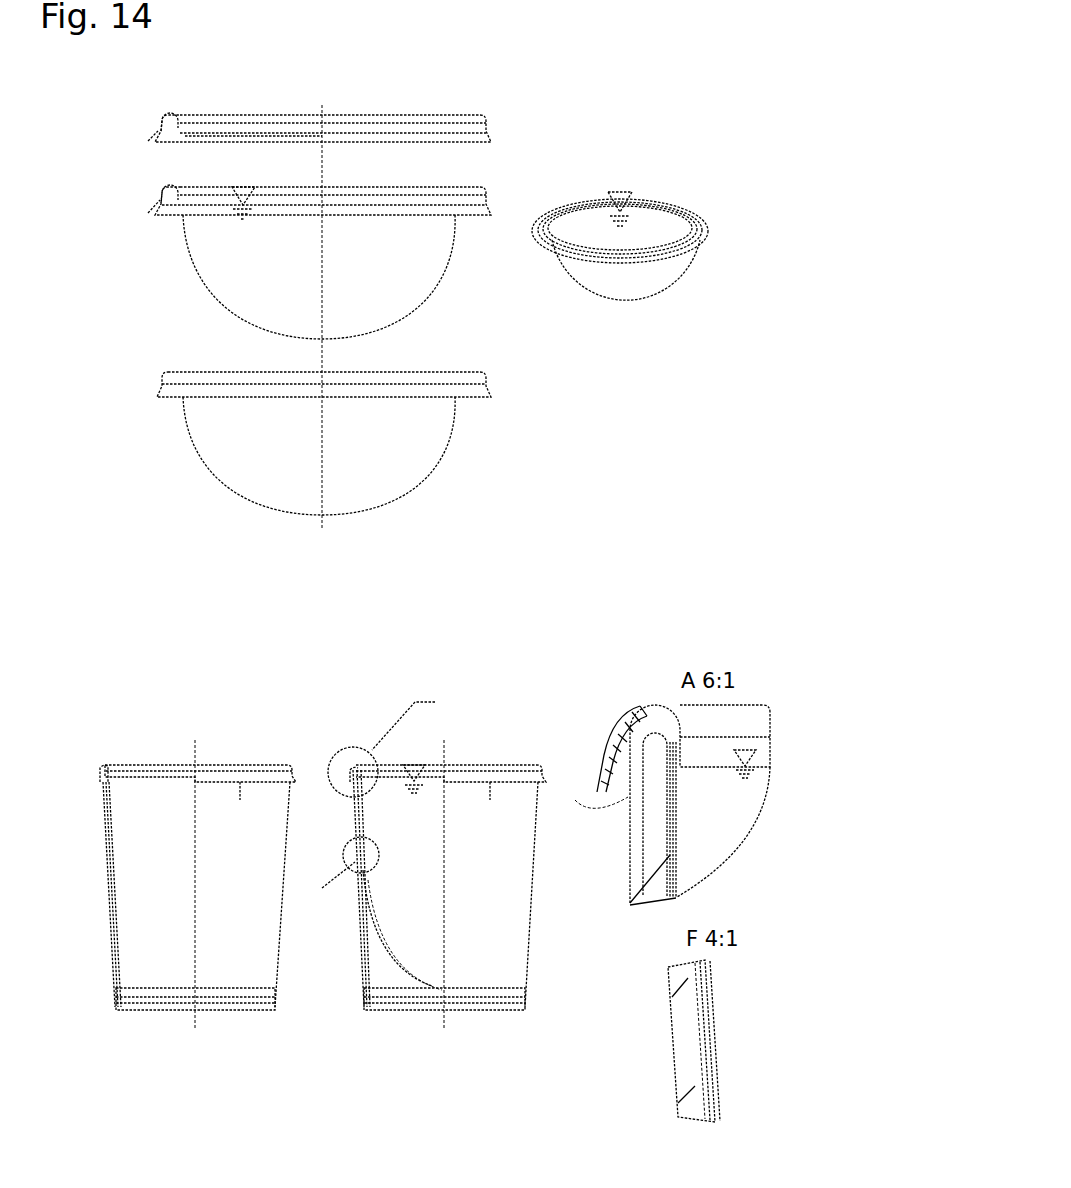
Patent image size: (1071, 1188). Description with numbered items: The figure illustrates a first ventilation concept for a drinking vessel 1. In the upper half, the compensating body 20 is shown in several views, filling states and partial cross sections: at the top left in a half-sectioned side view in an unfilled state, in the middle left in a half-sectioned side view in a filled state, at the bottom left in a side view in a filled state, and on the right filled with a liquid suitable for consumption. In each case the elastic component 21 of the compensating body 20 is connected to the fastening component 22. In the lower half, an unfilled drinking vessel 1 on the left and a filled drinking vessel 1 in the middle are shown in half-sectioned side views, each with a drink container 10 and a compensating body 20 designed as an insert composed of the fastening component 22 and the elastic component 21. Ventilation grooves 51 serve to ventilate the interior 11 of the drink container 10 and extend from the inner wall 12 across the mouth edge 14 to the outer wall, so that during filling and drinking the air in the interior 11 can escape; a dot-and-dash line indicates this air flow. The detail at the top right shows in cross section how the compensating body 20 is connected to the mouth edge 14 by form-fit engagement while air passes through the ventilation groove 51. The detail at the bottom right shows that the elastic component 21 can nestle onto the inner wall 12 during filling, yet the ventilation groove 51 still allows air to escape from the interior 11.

The drinking vessel 1 is at (217, 700).
The drink container 10 is at (107, 903).
The interior of the drink container 11 is at (165, 972).
The inner wall of the drink container 12 is at (119, 918).
The mouth edge of the drink container 14 is at (103, 781).
The compensating body 20 is at (369, 92).
The elastic component 21 is at (209, 133).
The fastening component 22 is at (263, 115).
The ventilation grooves 51 is at (240, 802).